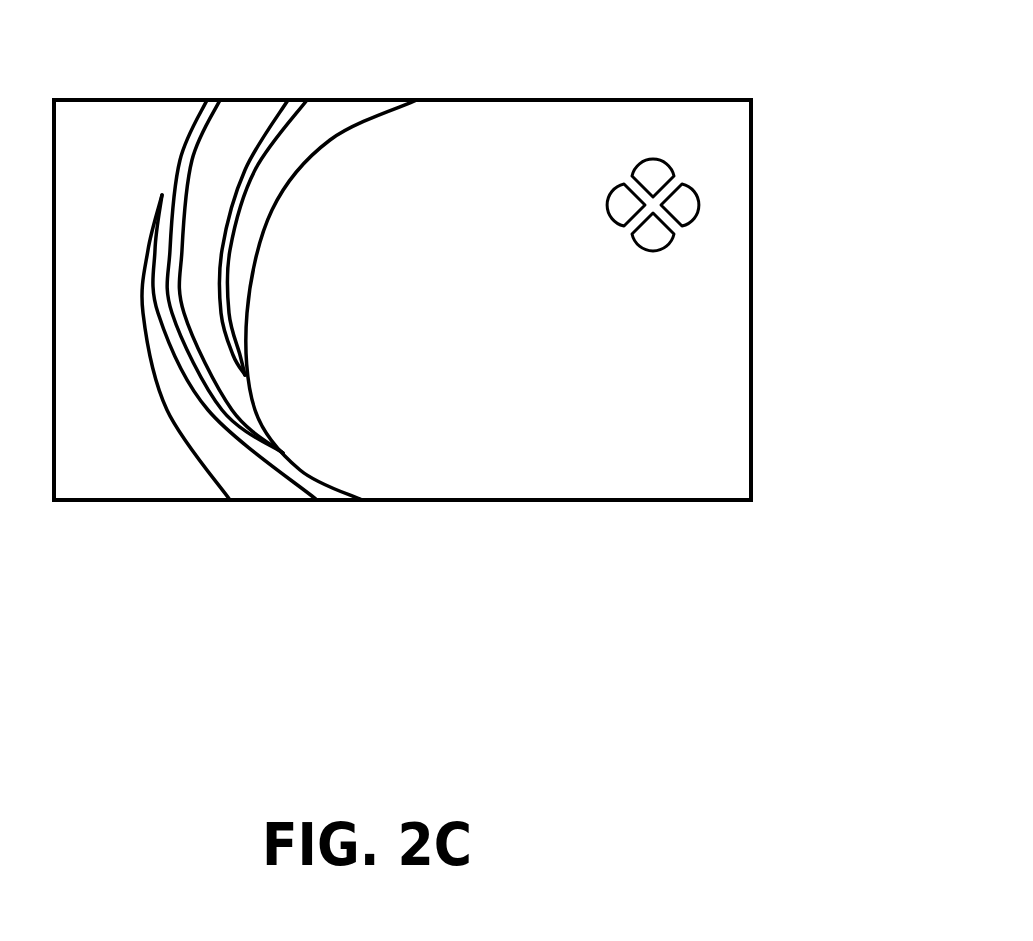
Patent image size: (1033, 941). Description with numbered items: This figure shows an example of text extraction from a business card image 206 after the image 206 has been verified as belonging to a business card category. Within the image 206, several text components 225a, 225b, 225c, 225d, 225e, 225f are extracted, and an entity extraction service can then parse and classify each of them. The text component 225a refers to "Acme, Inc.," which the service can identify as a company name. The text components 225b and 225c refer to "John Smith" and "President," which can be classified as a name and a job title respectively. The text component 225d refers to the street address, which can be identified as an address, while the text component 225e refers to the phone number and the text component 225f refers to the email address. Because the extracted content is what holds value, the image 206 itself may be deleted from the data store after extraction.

The image 206 is at (751, 98).
The text component 225a is at (498, 159).
The text component 225b is at (496, 255).
The text component 225c is at (483, 291).
The text component 225d is at (739, 404).
The text component 225e is at (595, 427).
The text component 225f is at (585, 455).